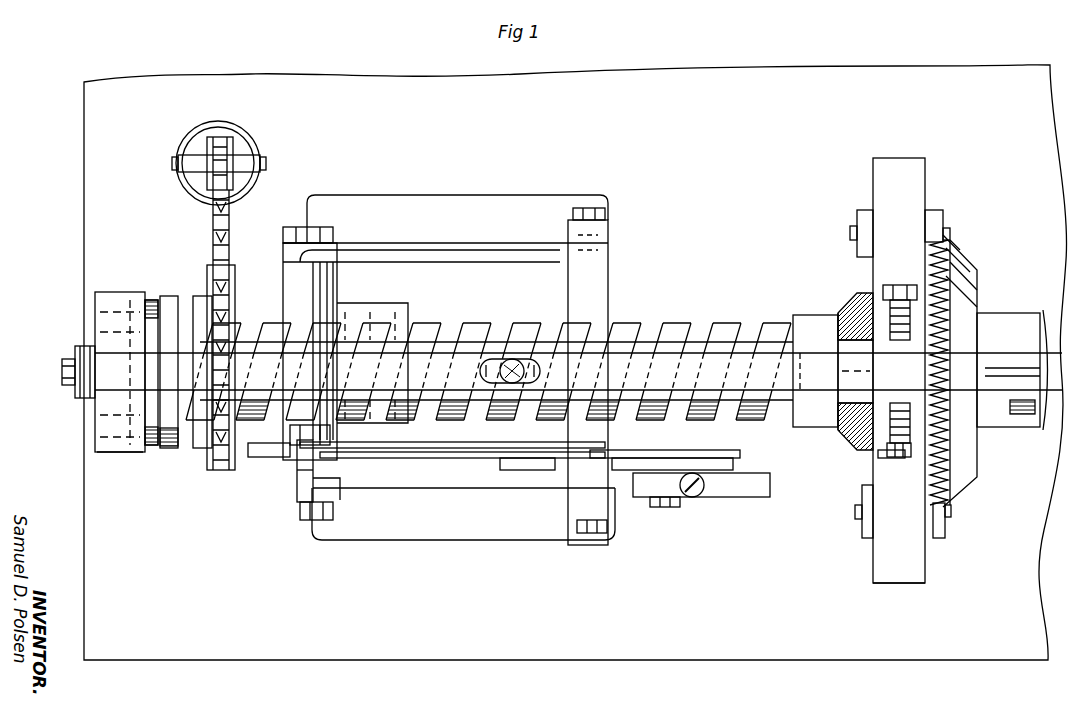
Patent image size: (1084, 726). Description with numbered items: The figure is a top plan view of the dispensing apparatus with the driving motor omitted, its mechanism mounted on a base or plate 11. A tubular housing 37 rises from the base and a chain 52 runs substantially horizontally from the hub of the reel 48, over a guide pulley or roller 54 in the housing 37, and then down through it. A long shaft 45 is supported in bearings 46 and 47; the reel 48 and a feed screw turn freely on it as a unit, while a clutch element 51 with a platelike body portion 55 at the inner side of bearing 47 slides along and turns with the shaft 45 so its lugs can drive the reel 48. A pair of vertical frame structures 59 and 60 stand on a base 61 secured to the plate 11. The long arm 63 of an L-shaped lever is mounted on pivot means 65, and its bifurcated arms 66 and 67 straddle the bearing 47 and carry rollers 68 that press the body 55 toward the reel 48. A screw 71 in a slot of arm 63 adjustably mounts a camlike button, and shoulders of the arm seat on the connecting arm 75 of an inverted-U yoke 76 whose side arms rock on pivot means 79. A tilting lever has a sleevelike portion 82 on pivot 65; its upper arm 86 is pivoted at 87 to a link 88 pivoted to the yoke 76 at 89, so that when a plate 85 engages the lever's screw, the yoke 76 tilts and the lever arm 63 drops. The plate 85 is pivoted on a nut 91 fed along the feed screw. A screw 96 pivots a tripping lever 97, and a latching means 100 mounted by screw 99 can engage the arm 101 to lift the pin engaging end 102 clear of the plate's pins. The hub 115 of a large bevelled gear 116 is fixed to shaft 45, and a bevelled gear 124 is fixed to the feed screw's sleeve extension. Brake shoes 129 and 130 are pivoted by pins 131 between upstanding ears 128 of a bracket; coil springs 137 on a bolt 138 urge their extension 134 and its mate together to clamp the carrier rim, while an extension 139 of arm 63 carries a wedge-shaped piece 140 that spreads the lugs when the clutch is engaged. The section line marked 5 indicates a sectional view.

The base or plate 11 is at (342, 106).
The section line 5 is at (292, 470).
The tubular housing 37 is at (258, 147).
The shaft 45 is at (63, 372).
The bearing 46 is at (1036, 322).
The bearing 47 is at (88, 355).
The reel 48 is at (233, 288).
The clutch element 51 is at (175, 286).
The chain 52 is at (212, 228).
The guide pulley or roller 54 is at (228, 136).
The platelike body portion 55 is at (170, 447).
The vertical frame structure 59 is at (383, 502).
The vertical frame structure 60 is at (441, 237).
The base 61 is at (495, 526).
The long arm 63 is at (420, 352).
The pivot means 65 is at (306, 521).
The arm 66 is at (118, 437).
The arm 67 is at (110, 306).
The rollers 68 is at (154, 298).
The screw 71 is at (528, 362).
The connecting arm 75 is at (590, 296).
The yoke 76 is at (558, 285).
The pivot means 79 is at (605, 213).
The sleevelike intermediate portion 82 is at (296, 470).
The plate 85 is at (405, 447).
The upper arm 86 is at (338, 434).
The pivot 87 is at (344, 500).
The link 88 is at (463, 459).
The pivot 89 is at (610, 454).
The nut 91 is at (372, 313).
The screw 96 is at (655, 508).
The tripping lever 97 is at (755, 452).
The screw 99 is at (692, 498).
The latching means 100 is at (750, 489).
The arm 101 is at (712, 468).
The forward pin engaging end 102 is at (515, 470).
The hub 115 is at (1010, 421).
The bevelled gear 116 is at (953, 273).
The bevelled gear 124 is at (851, 302).
The upstanding ears 128 is at (859, 213).
The brake shoe 129 is at (897, 163).
The brake shoe 130 is at (900, 578).
The pins 131 is at (951, 233).
The extension 134 is at (848, 350).
The coil springs 137 is at (902, 477).
The bolt 138 is at (880, 457).
The extension 139 is at (758, 365).
The wedge-shaped piece 140 is at (837, 372).